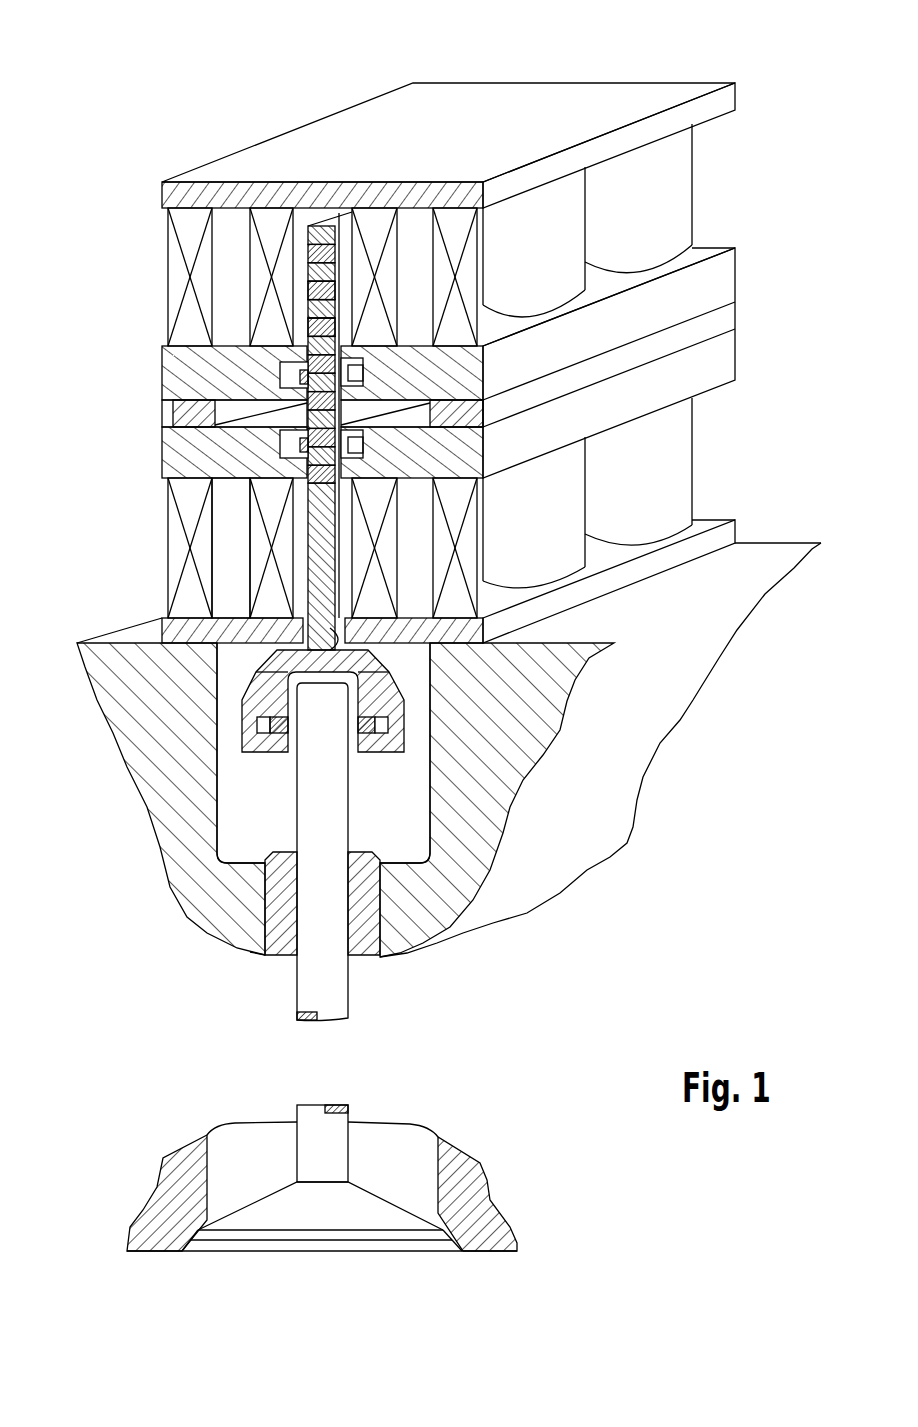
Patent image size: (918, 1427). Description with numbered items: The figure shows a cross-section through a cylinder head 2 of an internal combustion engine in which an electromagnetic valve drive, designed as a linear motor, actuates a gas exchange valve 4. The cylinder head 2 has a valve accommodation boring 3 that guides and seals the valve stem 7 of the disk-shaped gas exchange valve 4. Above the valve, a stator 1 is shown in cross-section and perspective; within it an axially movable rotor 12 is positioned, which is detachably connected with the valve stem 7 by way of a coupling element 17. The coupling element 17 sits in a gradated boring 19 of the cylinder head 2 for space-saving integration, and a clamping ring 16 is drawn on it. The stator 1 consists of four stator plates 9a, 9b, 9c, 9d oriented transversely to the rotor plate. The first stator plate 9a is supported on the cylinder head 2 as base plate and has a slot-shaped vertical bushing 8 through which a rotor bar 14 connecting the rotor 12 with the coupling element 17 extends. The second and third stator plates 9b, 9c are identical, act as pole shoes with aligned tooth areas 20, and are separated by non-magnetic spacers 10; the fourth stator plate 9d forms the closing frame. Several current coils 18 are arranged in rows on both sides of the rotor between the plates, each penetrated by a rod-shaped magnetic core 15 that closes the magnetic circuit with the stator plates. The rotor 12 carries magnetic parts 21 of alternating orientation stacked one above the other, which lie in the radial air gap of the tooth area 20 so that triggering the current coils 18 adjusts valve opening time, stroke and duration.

The stator 1 is at (674, 73).
The cylinder head 2 is at (767, 548).
The valve accommodation boring 3 is at (300, 918).
The gas exchange valve 4 is at (273, 1208).
The valve stem 7 is at (333, 993).
The bushing 8 is at (337, 643).
The stator plate 9a is at (178, 632).
The stator plate 9b is at (180, 459).
The stator plate 9c is at (180, 373).
The stator plate 9d is at (175, 197).
The spacer 10 is at (178, 412).
The rotor 12 is at (309, 222).
The rotor bar 14 is at (318, 578).
The magnetic core 15 is at (222, 513).
The clamping ring 16 is at (258, 725).
The coupling element 17 is at (255, 697).
The current coil 18 is at (178, 278).
The gradated boring 19 is at (243, 812).
The tooth area 20 is at (347, 355).
The magnetic part 21 is at (307, 291).